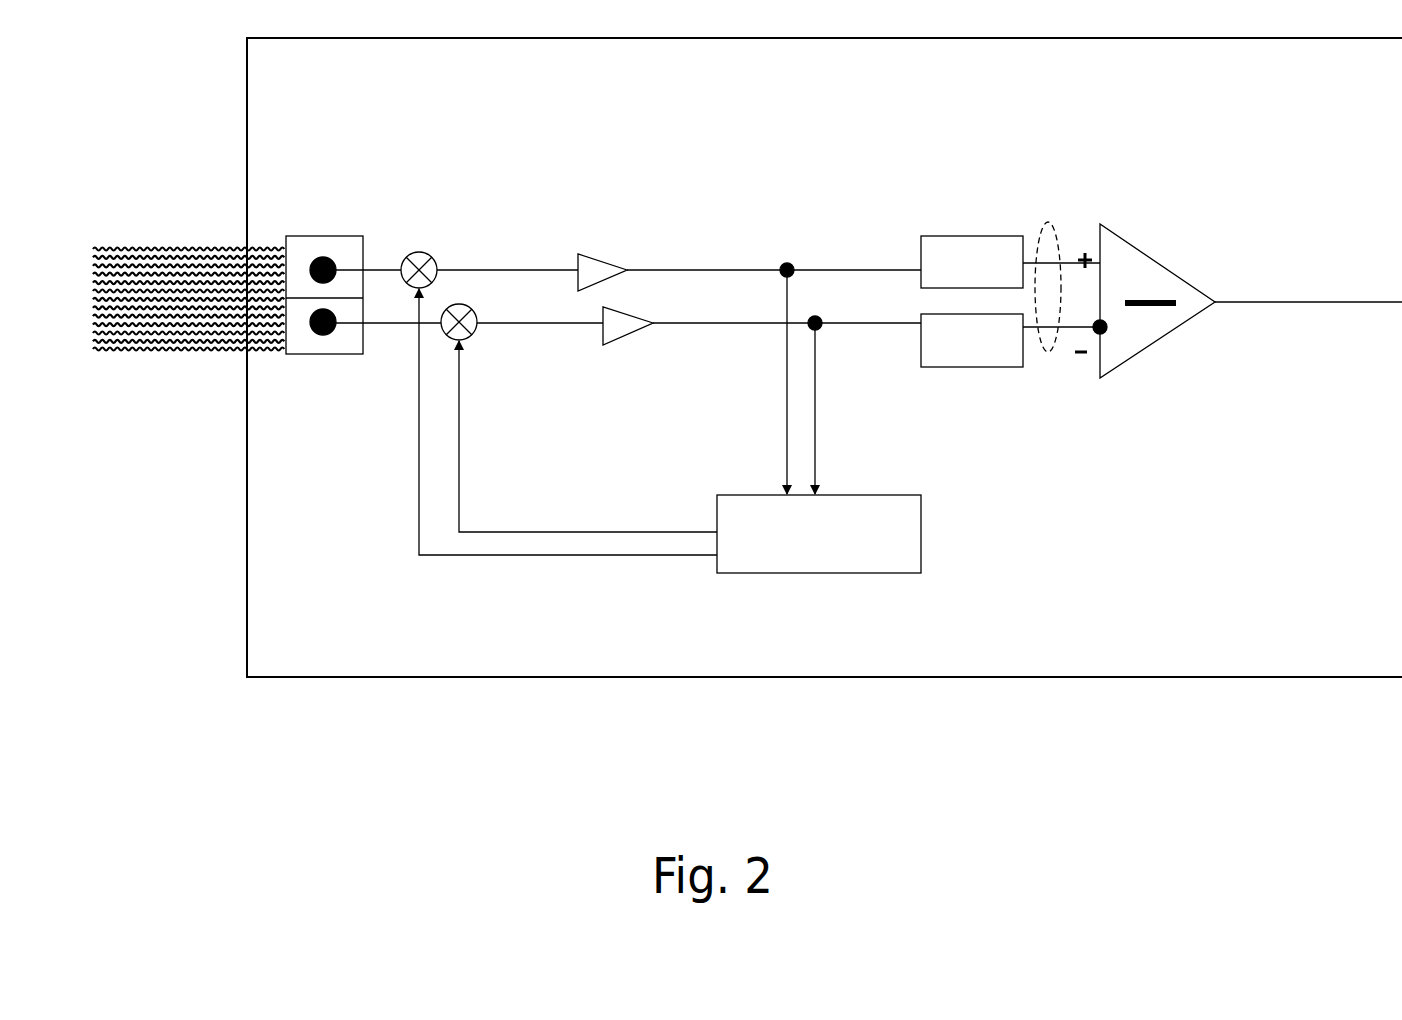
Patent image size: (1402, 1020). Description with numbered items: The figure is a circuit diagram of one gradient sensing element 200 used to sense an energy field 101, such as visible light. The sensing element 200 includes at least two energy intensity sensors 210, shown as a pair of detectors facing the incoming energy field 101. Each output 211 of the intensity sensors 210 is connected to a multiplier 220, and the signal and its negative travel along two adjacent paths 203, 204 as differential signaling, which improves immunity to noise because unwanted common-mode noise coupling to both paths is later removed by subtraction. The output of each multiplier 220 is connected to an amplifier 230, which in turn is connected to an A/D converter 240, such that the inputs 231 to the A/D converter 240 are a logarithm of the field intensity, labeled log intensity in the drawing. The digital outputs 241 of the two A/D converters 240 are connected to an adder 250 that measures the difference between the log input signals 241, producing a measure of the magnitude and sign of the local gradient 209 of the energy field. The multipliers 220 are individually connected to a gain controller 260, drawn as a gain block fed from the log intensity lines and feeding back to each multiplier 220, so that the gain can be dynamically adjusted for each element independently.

The sensing element 200 is at (755, 807).
The energy field 101 is at (132, 245).
The energy intensity sensor 210 is at (310, 236).
The output of the intensity sensor 211 is at (381, 270).
The multiplier 220 is at (462, 338).
The first adjacent path 203 is at (502, 272).
The second adjacent path 204 is at (542, 326).
The amplifier 230 is at (616, 343).
The input to the A/D converter 231 is at (843, 275).
The A/D converter 240 is at (968, 236).
The digital output 241 is at (1049, 352).
The adder 250 is at (1150, 262).
The local gradient 209 is at (1265, 303).
The gain controller 260 is at (832, 573).